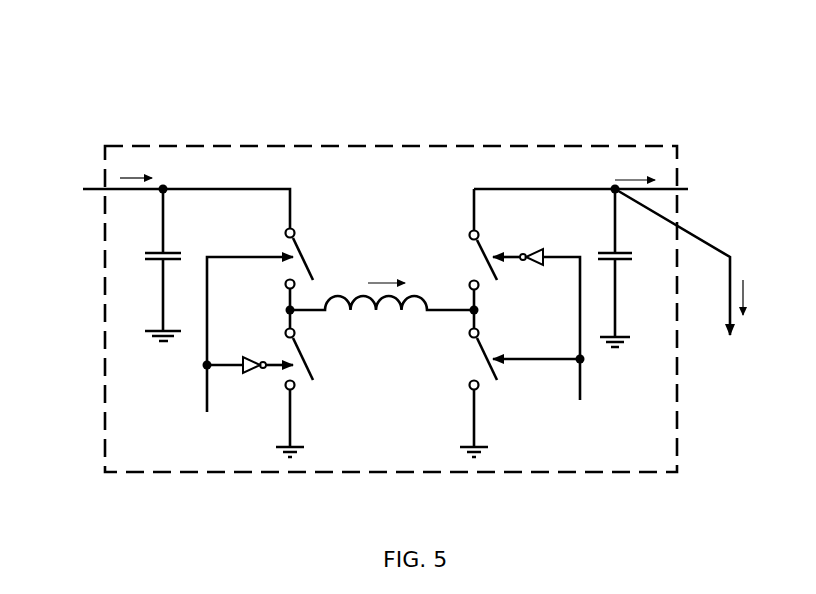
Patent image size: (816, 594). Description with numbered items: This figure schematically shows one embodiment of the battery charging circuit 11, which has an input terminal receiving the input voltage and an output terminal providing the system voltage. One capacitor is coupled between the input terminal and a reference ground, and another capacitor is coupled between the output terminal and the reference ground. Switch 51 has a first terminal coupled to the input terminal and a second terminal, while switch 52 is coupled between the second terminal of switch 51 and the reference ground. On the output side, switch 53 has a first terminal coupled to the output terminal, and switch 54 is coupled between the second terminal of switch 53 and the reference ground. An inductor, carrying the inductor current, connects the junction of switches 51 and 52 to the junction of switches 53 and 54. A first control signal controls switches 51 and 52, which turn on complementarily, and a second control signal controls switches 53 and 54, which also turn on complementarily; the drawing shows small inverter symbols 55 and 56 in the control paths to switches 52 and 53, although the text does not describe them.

The battery charging circuit 11 is at (695, 86).
The switch 51 is at (314, 270).
The switch 52 is at (309, 383).
The switch 53 is at (468, 271).
The switch 54 is at (468, 383).
The first inverter 55 is at (250, 354).
The second inverter 56 is at (522, 245).